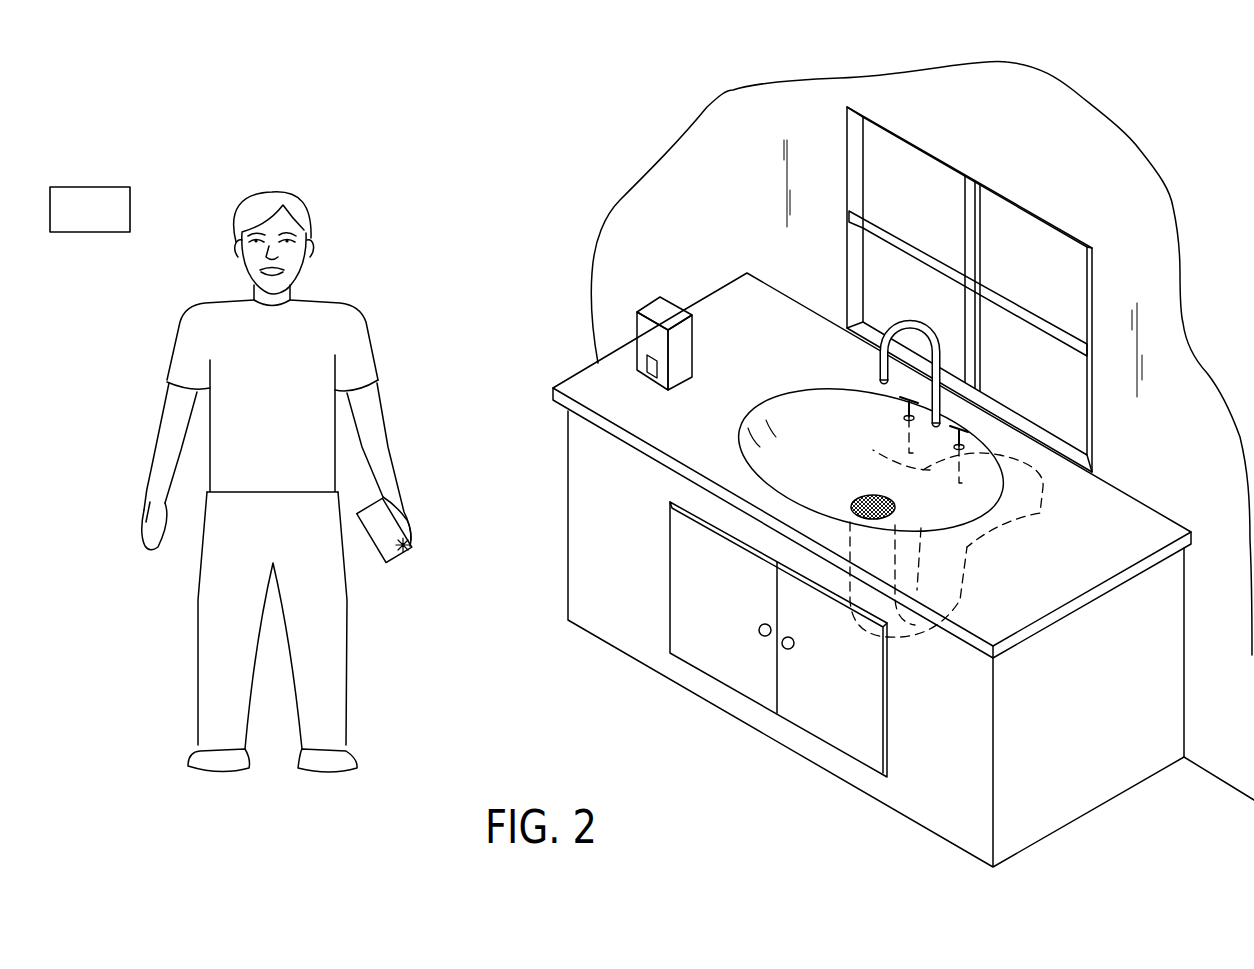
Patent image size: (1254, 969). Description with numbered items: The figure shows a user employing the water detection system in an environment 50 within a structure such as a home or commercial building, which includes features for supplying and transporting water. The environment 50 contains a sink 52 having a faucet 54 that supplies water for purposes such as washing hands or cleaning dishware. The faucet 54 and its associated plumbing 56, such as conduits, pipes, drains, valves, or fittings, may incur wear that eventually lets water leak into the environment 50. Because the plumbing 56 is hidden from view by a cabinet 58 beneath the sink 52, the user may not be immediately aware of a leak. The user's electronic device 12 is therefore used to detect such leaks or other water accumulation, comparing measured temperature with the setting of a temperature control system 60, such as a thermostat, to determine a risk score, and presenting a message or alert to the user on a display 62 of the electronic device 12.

The electronic device 12 is at (402, 556).
The environment 50 is at (554, 233).
The sink 52 is at (801, 428).
The faucet 54 is at (906, 328).
The plumbing 56 is at (903, 433).
The cabinet 58 is at (997, 714).
The temperature control system 60 is at (70, 186).
The display 62 is at (407, 545).